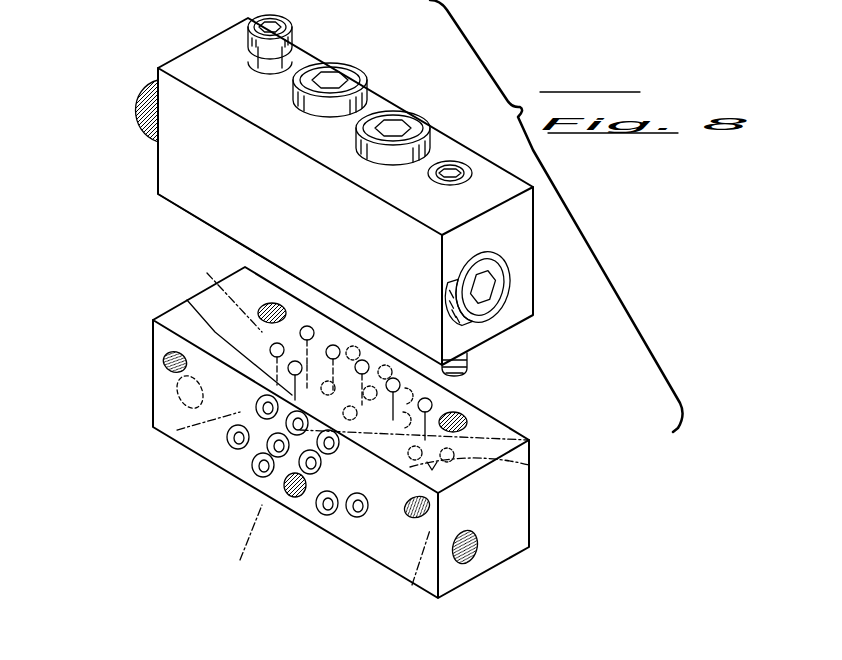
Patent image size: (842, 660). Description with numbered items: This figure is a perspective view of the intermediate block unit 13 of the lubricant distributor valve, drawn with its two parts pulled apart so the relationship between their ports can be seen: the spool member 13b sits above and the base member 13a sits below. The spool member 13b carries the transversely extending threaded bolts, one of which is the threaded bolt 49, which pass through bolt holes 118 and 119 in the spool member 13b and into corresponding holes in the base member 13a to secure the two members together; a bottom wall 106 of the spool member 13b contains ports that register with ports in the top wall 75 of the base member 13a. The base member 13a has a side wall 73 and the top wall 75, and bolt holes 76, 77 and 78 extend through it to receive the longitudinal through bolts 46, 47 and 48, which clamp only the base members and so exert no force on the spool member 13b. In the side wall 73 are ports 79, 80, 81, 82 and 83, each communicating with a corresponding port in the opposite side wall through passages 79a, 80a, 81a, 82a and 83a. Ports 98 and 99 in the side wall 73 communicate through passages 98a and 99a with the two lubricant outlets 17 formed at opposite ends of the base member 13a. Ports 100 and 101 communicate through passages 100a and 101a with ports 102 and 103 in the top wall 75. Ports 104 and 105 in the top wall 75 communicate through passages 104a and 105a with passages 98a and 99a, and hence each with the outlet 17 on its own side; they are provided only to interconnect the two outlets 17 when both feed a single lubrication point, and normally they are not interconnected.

The intermediate block unit 13 is at (127, 260).
The base member 13a is at (140, 385).
The spool member 13b is at (156, 163).
The lubricant outlets 17 is at (178, 397).
The through bolt 46 is at (163, 360).
The through bolt 47 is at (292, 497).
The through bolt 48 is at (400, 497).
The threaded bolt 49 is at (345, 190).
The side wall 73 is at (414, 556).
The top wall 75 is at (493, 433).
The bolt hole 76 is at (151, 321).
The bolt hole 77 is at (287, 497).
The bolt hole 78 is at (438, 505).
The port 79 is at (300, 468).
The passage 79a is at (237, 543).
The port 80 is at (255, 472).
The passage 80a is at (366, 362).
The port 81 is at (268, 450).
The passage 81a is at (337, 348).
The port 82 is at (307, 476).
The passage 82a is at (468, 418).
The port 83 is at (327, 516).
The passage 83a is at (455, 485).
The port 98 is at (228, 440).
The passage 98a is at (177, 430).
The port 99 is at (356, 518).
The passage 99a is at (412, 570).
The port 100 is at (258, 400).
The passage 100a is at (216, 340).
The port 101 is at (330, 452).
The passage 101a is at (529, 465).
The port 102 is at (309, 326).
The port 103 is at (467, 362).
The port 104 is at (270, 347).
The passage 104a is at (227, 293).
The port 105 is at (440, 392).
The passage 105a is at (530, 440).
The bottom wall 106 is at (178, 204).
The bolt hole 118 is at (493, 422).
The bolt hole 119 is at (282, 305).